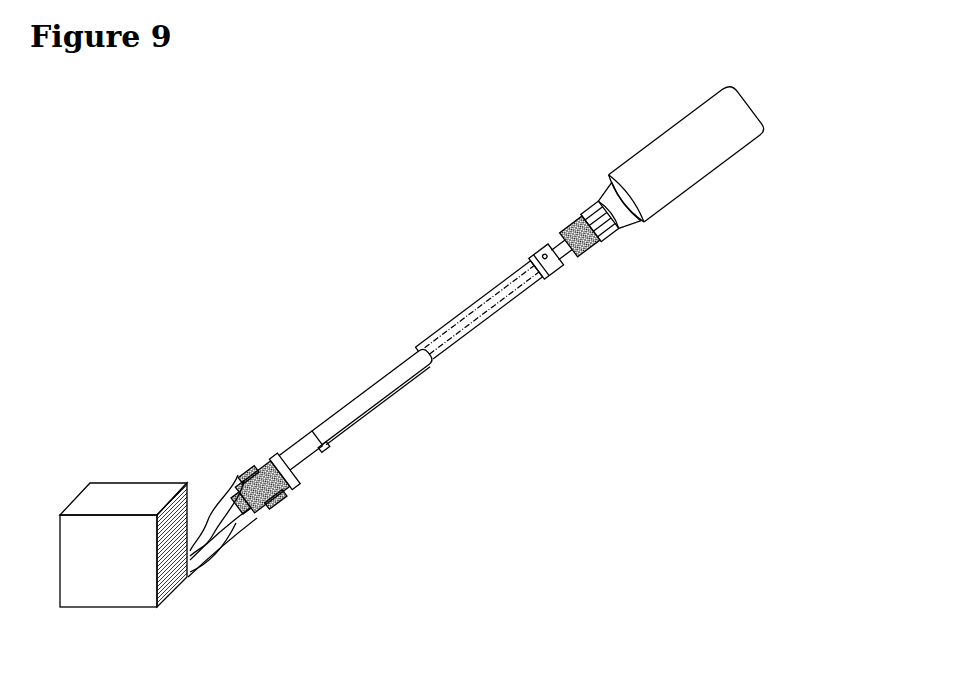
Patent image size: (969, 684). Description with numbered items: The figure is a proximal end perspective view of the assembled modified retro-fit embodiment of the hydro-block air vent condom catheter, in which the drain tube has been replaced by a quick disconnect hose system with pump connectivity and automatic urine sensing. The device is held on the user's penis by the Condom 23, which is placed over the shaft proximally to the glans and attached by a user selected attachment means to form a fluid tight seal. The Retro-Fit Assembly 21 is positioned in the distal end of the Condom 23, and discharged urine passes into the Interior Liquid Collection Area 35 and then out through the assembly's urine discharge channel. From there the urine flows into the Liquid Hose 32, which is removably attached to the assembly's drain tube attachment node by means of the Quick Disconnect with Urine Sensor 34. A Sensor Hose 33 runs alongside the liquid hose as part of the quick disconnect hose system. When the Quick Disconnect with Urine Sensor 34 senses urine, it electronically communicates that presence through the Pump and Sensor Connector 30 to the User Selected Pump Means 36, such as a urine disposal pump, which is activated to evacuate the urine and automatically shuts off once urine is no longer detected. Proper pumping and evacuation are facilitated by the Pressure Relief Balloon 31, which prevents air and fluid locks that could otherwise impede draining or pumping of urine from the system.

The Retro-Fit Assembly 21 is at (587, 205).
The Condom 23 is at (702, 158).
The Pump and Sensor Connector 30 is at (253, 463).
The Pressure Relief Balloon 31 is at (357, 399).
The Liquid Hose 32 is at (465, 312).
The Sensor Hose 33 is at (497, 308).
The Quick Disconnect with Urine Sensor 34 is at (587, 237).
The Interior Liquid Collection Area 35 is at (608, 188).
The User Selected Pump Means 36 is at (127, 572).